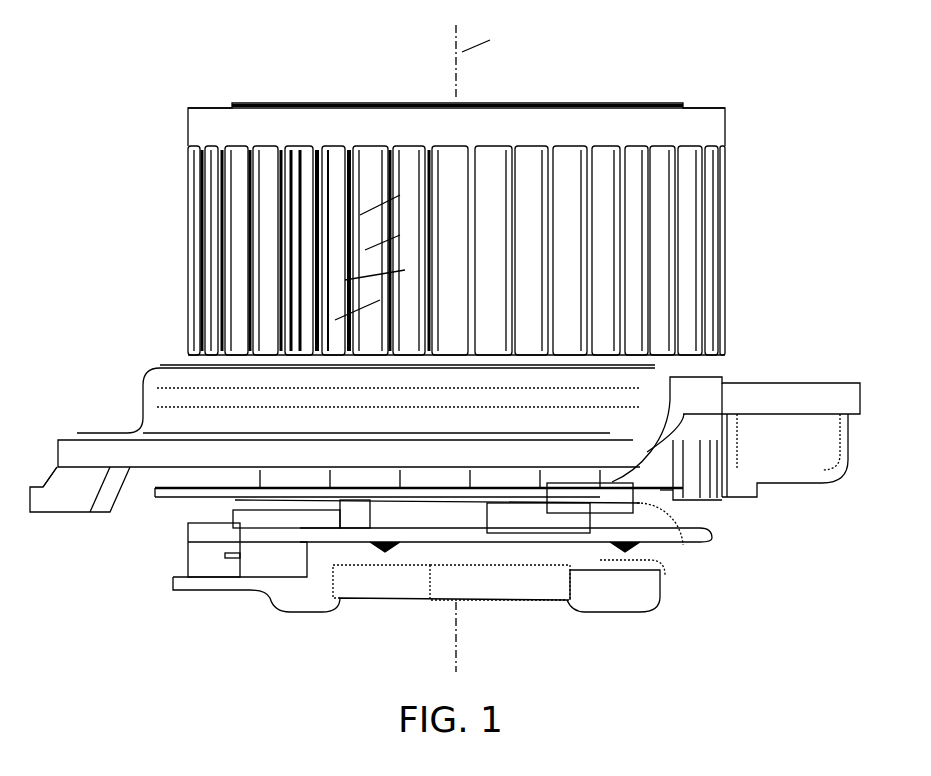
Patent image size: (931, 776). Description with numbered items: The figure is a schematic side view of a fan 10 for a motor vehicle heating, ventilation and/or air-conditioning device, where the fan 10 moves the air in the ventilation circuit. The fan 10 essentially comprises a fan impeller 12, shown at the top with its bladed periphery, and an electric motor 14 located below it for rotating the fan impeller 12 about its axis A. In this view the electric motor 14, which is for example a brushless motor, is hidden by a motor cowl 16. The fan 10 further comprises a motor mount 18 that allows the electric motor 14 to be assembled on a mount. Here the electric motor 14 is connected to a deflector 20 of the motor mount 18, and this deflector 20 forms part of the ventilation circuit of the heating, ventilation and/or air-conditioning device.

The fan 10 is at (146, 112).
The fan impeller 12 is at (700, 127).
The electric motor 14 is at (632, 591).
The motor cowl 16 is at (281, 592).
The motor mount 18 is at (700, 492).
The deflector 20 is at (693, 373).